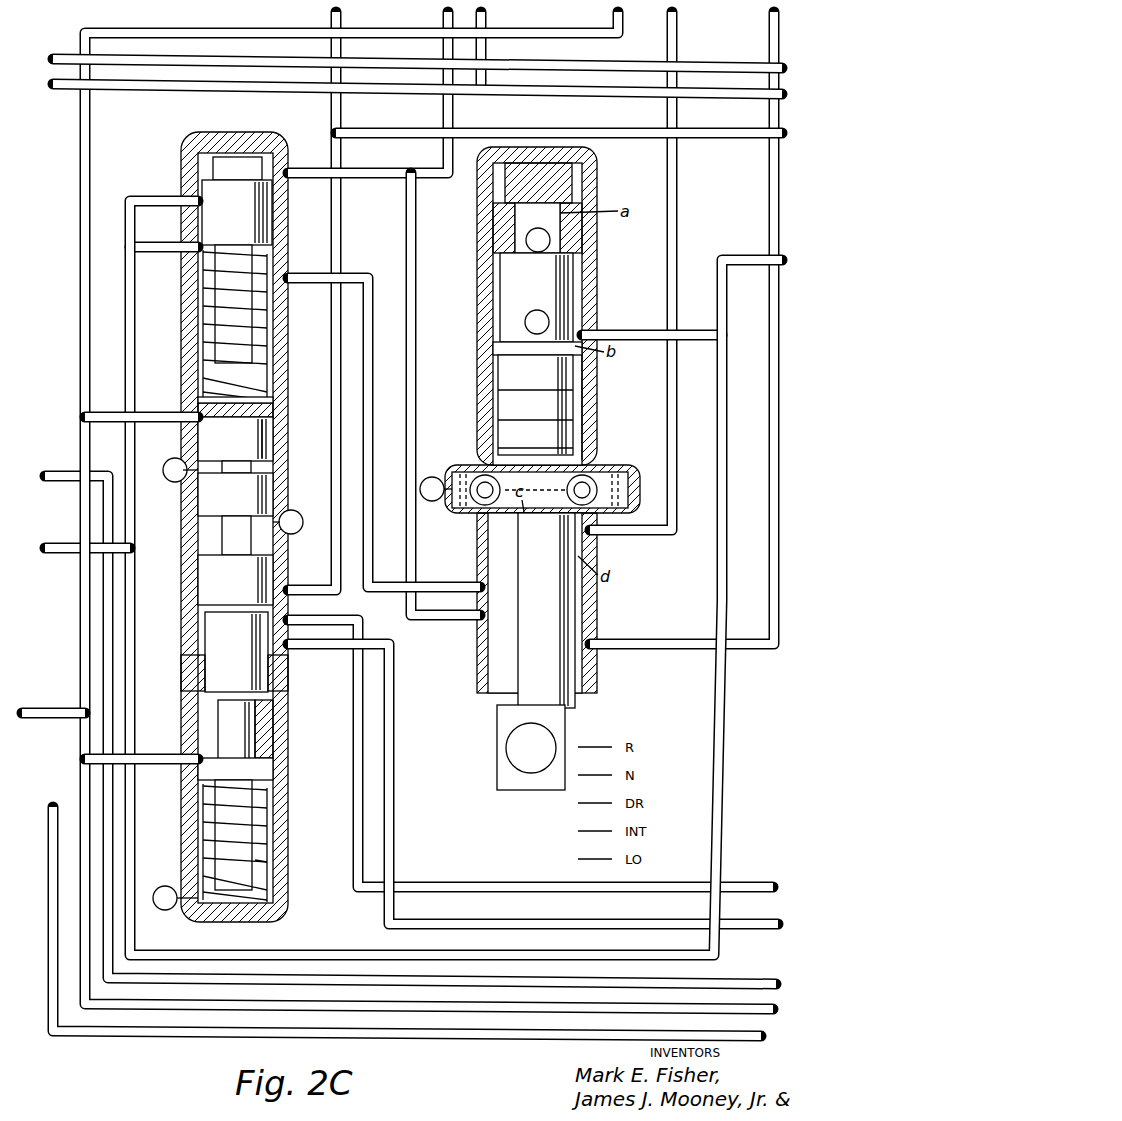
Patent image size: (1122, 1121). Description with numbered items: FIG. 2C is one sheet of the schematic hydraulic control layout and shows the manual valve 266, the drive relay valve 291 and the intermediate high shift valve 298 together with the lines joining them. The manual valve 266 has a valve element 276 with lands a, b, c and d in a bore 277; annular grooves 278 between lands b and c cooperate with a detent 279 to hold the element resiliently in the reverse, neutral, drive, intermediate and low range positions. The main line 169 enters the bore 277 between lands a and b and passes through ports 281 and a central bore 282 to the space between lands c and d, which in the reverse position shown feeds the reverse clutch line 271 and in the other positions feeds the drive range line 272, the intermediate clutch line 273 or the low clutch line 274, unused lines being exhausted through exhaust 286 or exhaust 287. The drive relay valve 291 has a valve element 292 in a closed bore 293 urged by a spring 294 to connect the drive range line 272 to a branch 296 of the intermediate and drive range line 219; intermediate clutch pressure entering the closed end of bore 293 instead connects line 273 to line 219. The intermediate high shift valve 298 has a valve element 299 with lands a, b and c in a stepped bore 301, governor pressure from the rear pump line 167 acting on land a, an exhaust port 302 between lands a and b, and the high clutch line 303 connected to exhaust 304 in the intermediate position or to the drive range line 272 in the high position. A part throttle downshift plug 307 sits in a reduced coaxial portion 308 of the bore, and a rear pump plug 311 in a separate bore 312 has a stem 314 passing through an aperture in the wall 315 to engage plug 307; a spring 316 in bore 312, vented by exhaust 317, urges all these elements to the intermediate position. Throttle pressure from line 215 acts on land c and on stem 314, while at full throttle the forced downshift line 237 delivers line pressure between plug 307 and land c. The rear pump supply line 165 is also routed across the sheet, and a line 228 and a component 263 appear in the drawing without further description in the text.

The rear pump supply line 165 is at (52, 806).
The rear pump line 167 is at (614, 17).
The main line 169 is at (62, 472).
The throttle pressure line 215 is at (70, 88).
The intermediate and drive range line 219 is at (148, 200).
The conduit 228 is at (72, 57).
The forced downshift line 237 is at (308, 650).
The valve plunger 263 is at (528, 560).
The manual valve 266 is at (598, 195).
The reverse clutch line 271 is at (668, 30).
The drive range line 272 is at (345, 280).
The intermediate clutch line 273 is at (446, 14).
The low clutch line 274 is at (770, 20).
The valve element 276 is at (520, 268).
The bore 277 is at (585, 440).
The annular grooves 278 is at (515, 428).
The detent 279 is at (489, 464).
The ports 281 is at (525, 322).
The central bore 282 is at (550, 225).
The exhaust 286 is at (432, 501).
The exhaust 287 is at (500, 688).
The drive relay valve 291 is at (186, 159).
The valve element 292 is at (236, 165).
The closed bore 293 is at (205, 342).
The spring 294 is at (268, 345).
The branch 296 is at (178, 250).
The intermediate high shift valve 298 is at (191, 447).
The valve element 299 is at (265, 450).
The stepped bore 301 is at (205, 552).
The exhaust port 302 is at (177, 483).
The high clutch line 303 is at (330, 14).
The exhaust 304 is at (293, 509).
The part throttle downshift plug 307 is at (210, 625).
The reduced coaxial portion 308 is at (205, 670).
The rear pump plug 311 is at (260, 778).
The separate bore 312 is at (260, 820).
The stem 314 is at (220, 723).
The wall 315 is at (260, 748).
The spring 316 is at (260, 865).
The exhaust 317 is at (167, 910).